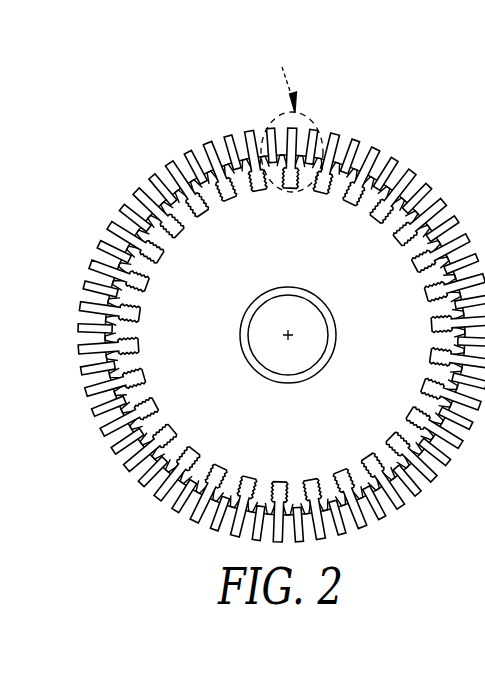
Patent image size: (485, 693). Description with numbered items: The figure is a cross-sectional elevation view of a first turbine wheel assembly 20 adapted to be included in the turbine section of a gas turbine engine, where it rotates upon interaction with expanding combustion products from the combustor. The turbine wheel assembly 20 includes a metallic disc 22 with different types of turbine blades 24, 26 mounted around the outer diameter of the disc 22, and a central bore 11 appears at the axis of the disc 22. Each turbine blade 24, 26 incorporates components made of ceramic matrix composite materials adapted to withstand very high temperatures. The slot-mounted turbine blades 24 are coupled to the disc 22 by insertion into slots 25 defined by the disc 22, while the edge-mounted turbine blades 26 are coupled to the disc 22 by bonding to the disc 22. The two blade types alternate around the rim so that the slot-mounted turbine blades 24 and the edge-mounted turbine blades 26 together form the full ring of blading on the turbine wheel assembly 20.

The turbine wheel assembly 20 is at (129, 138).
The central shaft bore 11 is at (290, 333).
The metallic disc 22 is at (148, 308).
The slot-mounted turbine blades 24 is at (284, 133).
The slots 25 is at (374, 151).
The edge-mounted turbine blades 26 is at (277, 138).